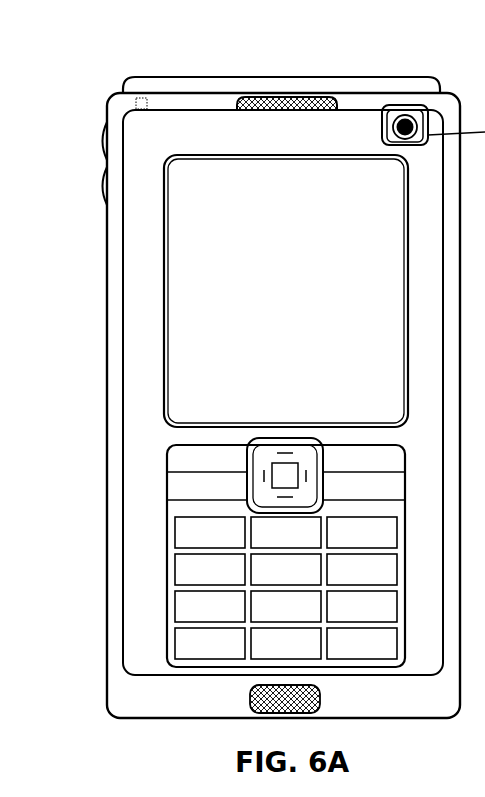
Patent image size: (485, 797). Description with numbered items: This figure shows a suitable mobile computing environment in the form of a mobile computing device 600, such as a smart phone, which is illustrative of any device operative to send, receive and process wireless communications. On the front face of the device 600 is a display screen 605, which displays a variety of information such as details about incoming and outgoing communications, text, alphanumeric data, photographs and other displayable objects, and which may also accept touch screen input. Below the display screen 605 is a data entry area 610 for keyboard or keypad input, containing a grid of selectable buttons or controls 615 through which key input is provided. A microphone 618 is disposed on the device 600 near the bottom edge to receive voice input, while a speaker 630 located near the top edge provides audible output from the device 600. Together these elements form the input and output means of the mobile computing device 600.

The mobile computing device 600 is at (98, 97).
The speaker 630 is at (335, 101).
The display screen 605 is at (193, 278).
The data entry area 610 is at (167, 482).
The selectable buttons or controls 615 is at (185, 570).
The microphone 618 is at (250, 697).